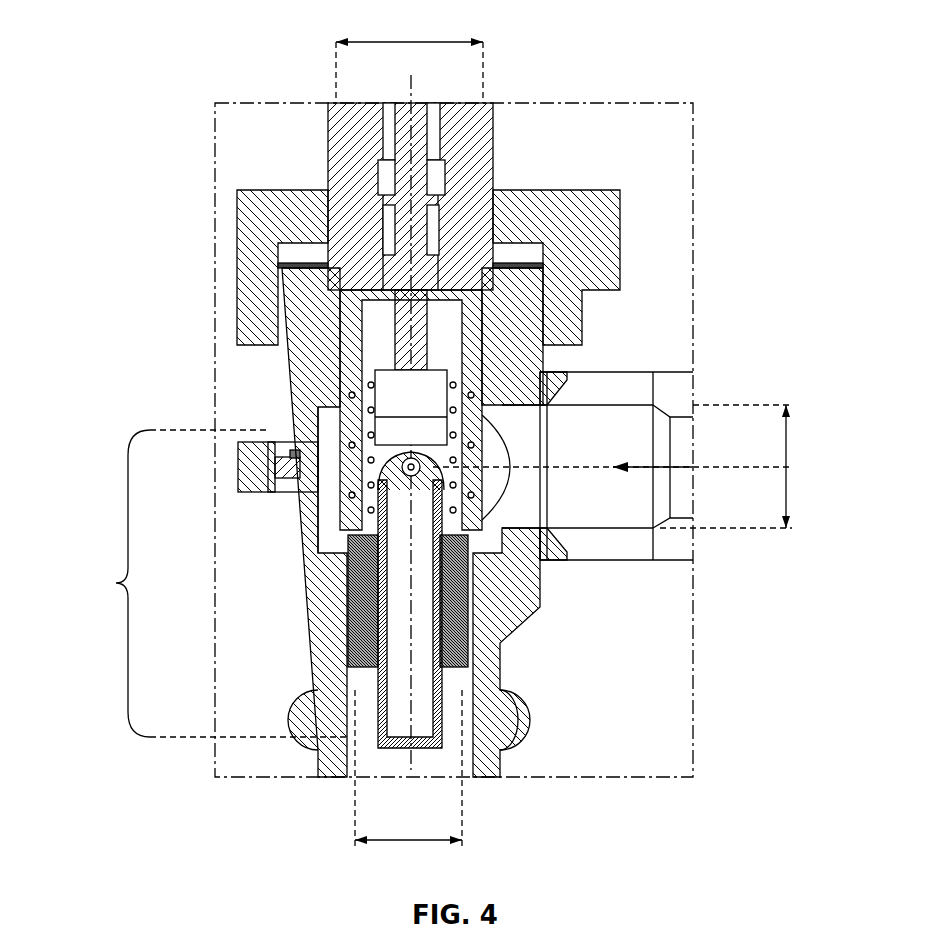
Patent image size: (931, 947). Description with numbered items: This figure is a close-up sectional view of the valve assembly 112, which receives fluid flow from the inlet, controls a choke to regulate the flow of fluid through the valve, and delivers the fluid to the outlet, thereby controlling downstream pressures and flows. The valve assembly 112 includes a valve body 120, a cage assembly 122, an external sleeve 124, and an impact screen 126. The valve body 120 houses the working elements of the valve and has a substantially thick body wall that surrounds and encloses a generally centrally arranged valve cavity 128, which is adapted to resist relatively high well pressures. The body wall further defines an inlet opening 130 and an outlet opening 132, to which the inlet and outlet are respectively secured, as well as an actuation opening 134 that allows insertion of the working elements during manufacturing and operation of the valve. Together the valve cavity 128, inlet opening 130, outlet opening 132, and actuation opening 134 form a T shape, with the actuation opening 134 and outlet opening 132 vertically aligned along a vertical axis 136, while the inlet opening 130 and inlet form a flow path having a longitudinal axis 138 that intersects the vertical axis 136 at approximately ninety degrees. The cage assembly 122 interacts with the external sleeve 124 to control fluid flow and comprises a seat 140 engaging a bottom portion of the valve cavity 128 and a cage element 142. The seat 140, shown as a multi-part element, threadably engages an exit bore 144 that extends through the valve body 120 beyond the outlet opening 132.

The valve assembly 112 is at (108, 624).
The valve body 120 is at (297, 600).
The cage assembly 122 is at (209, 583).
The external sleeve 124 is at (420, 377).
The impact screen 126 is at (470, 398).
The valve cavity 128 is at (327, 515).
The inlet opening 130 is at (787, 458).
The outlet opening 132 is at (400, 842).
The actuation opening 134 is at (408, 42).
The vertical axis 136 is at (413, 667).
The longitudinal axis 138 is at (596, 467).
The seat 140 is at (460, 567).
The cage element 142 is at (387, 443).
The exit bore 144 is at (357, 672).